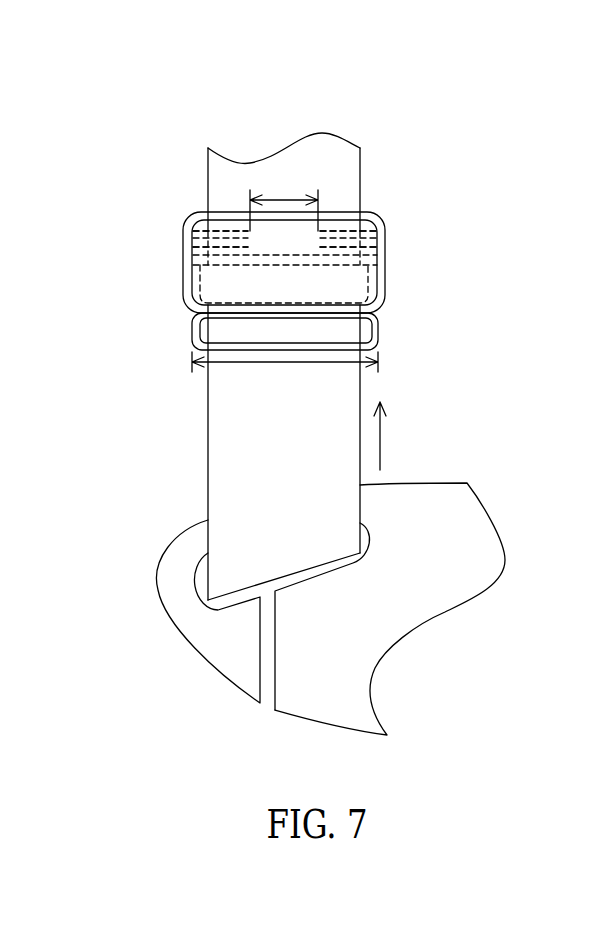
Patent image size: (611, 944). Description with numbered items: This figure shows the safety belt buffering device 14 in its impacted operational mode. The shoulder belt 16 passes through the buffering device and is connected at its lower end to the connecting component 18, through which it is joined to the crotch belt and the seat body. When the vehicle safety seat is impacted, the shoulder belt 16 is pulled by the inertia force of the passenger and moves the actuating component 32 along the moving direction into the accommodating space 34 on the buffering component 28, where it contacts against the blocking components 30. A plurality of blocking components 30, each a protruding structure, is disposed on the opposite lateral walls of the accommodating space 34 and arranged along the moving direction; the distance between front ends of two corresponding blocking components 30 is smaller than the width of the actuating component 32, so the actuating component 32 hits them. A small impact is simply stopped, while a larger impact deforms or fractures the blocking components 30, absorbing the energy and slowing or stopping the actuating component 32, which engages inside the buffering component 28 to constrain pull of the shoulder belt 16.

The safety belt buffering device 14 is at (483, 138).
The shoulder belt 16 is at (253, 481).
The connecting component 18 is at (230, 653).
The buffering component 28 is at (233, 310).
The blocking component 30 is at (197, 220).
The actuating component 32 is at (373, 327).
The accommodating space 34 is at (327, 225).